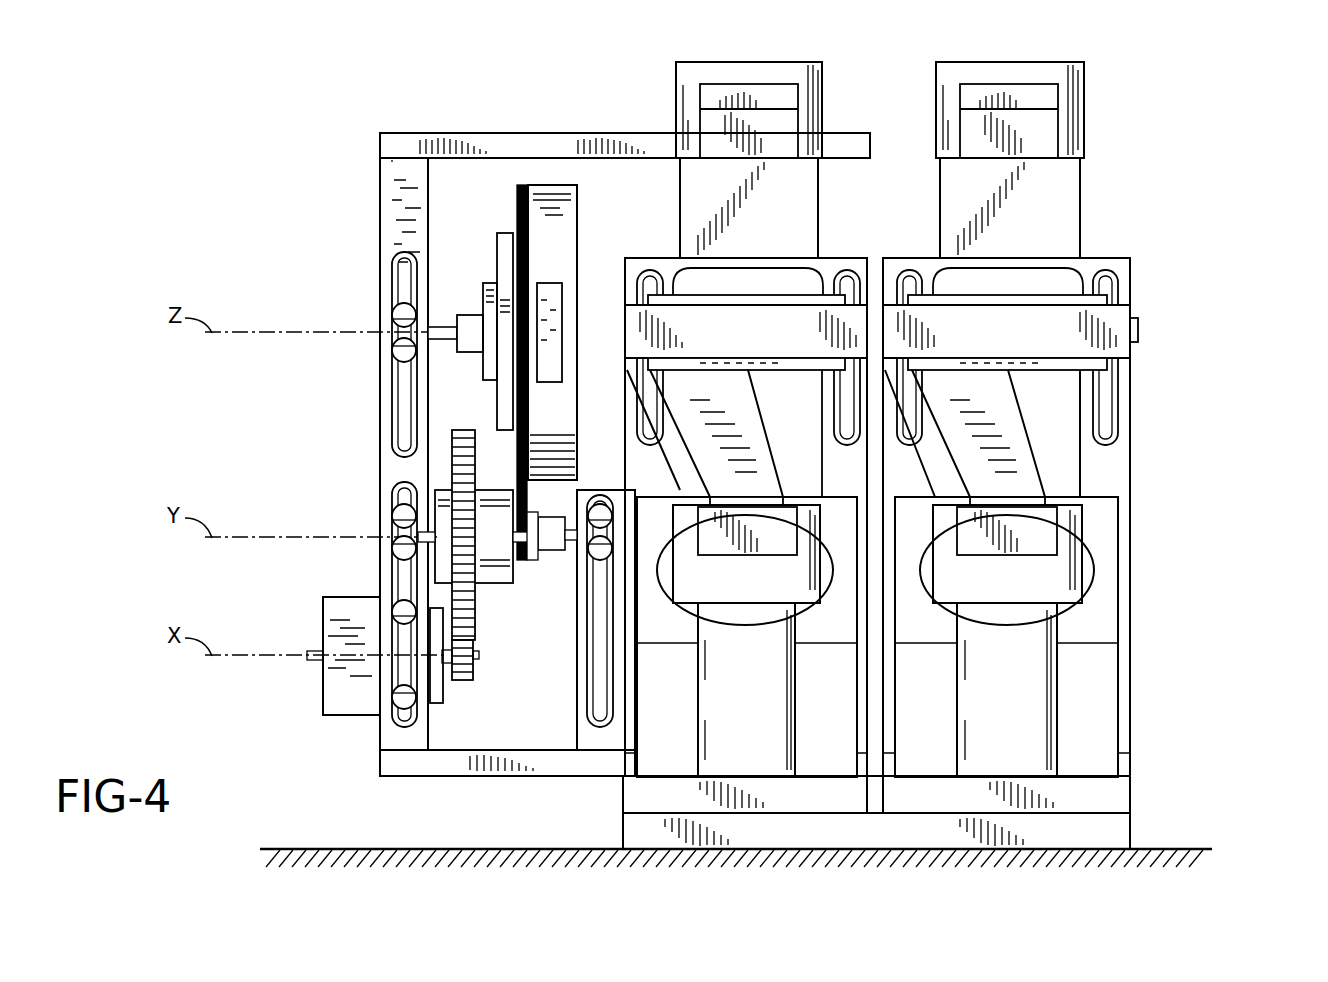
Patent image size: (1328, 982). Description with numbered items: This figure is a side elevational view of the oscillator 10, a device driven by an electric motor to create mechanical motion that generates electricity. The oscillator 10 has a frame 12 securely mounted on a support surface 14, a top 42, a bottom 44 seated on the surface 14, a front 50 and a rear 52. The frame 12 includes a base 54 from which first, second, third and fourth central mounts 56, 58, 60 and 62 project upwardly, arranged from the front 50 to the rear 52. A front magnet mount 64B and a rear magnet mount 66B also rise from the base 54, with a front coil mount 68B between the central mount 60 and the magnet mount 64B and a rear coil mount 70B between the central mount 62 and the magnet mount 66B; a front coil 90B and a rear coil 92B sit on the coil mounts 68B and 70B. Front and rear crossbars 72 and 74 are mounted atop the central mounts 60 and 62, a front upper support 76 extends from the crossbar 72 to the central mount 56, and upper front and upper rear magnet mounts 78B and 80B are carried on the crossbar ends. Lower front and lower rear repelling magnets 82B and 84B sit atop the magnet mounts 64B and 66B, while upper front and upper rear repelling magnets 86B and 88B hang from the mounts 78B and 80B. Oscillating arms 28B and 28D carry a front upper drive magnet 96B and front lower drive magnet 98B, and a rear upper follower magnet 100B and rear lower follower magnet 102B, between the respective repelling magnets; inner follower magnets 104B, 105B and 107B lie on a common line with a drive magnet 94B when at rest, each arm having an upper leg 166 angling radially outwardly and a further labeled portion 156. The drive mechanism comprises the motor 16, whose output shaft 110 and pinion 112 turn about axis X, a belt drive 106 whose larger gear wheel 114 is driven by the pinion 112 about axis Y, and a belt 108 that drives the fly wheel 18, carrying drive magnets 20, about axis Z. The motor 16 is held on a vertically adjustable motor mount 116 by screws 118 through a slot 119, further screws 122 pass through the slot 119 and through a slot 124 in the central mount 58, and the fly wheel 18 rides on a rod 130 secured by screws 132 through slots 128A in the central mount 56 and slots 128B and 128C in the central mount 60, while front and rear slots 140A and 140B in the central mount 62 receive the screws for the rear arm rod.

The oscillator 10 is at (1174, 187).
The frame 12 is at (398, 780).
The support surface 14 is at (1180, 848).
The electric motor 16 is at (433, 703).
The fly wheel 18 is at (556, 183).
The drive magnets 20 is at (548, 292).
The oscillating arm 28B is at (735, 354).
The oscillating arm 28D is at (1130, 317).
The top 42 is at (622, 48).
The bottom 44 is at (903, 858).
The front 50 is at (328, 183).
The rear 52 is at (1186, 363).
The base 54 is at (630, 795).
The first central mount 56 is at (388, 230).
The second central mount 58 is at (578, 720).
The third central mount 60 is at (833, 470).
The fourth central mount 62 is at (1132, 270).
The second front magnet mount 64B is at (720, 700).
The second rear magnet mount 66B is at (1057, 580).
The second front coil mount 68B is at (670, 762).
The rear coil mount 70B is at (1093, 688).
The front crossbar 72 is at (772, 95).
The rear crossbar 74 is at (1033, 95).
The front upper support 76 is at (405, 140).
The upper front magnet mount 78B is at (824, 73).
The upper rear magnet mount 80B is at (1086, 88).
The lower front repelling magnet 82B is at (778, 545).
The lower rear repelling magnet 84B is at (1047, 527).
The upper front repelling magnet 86B is at (790, 125).
The upper rear repelling magnet 88B is at (1046, 137).
The second front electrically conductive coil 90B is at (807, 610).
The rear electrically conductive coil 92B is at (1065, 612).
The drive magnet 94B is at (618, 322).
The front upper drive magnet 96B is at (782, 300).
The front lower drive magnet 98B is at (790, 372).
The rear upper follower magnet 100B is at (1045, 300).
The rear lower follower magnet 102B is at (1058, 372).
The follower magnet 104B is at (878, 327).
The follower magnet 105B is at (886, 327).
The belt drive 106 is at (490, 582).
The follower magnet 107B is at (1140, 330).
The belt 108 is at (522, 182).
The rotational output shaft 110 is at (556, 657).
The pinion 112 is at (467, 682).
The larger diameter gear wheel 114 is at (453, 475).
The vertically adjustable motor mount 116 is at (323, 680).
The screws 118 is at (400, 614).
The slot 119 is at (400, 675).
The screws 122 is at (600, 497).
The slot 124 is at (600, 628).
The slots 128A is at (403, 288).
The slots 128B is at (650, 283).
The slots 128C is at (843, 283).
The rod 130 is at (445, 333).
The screws 132 is at (403, 313).
The front slots 140A is at (907, 293).
The rear slots 140B is at (1105, 390).
The arch 156 is at (1057, 325).
The upper leg 166 is at (1013, 472).